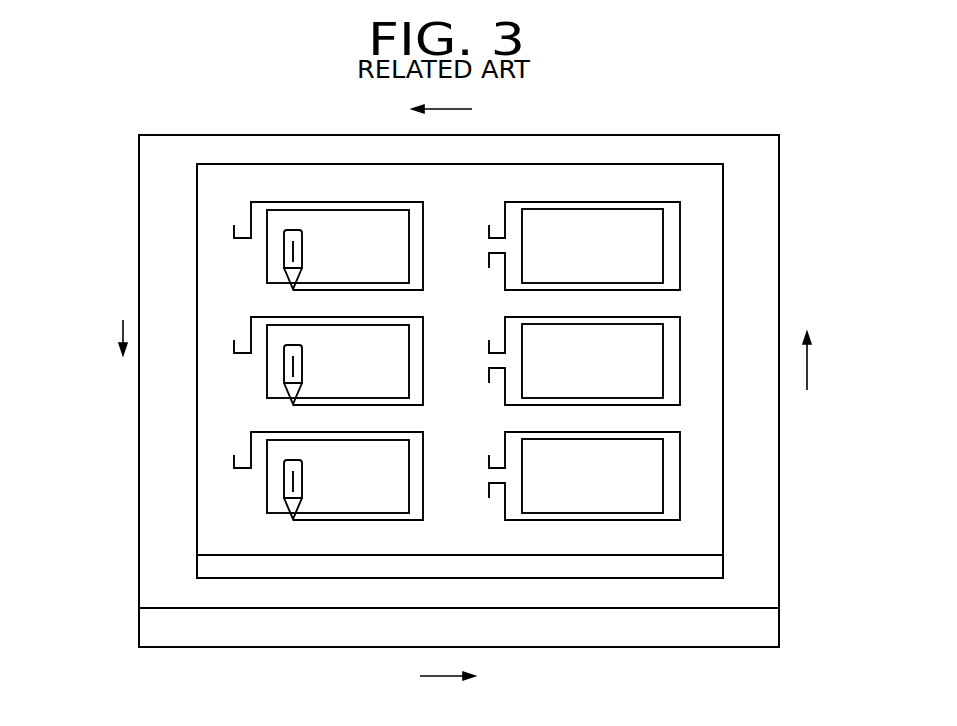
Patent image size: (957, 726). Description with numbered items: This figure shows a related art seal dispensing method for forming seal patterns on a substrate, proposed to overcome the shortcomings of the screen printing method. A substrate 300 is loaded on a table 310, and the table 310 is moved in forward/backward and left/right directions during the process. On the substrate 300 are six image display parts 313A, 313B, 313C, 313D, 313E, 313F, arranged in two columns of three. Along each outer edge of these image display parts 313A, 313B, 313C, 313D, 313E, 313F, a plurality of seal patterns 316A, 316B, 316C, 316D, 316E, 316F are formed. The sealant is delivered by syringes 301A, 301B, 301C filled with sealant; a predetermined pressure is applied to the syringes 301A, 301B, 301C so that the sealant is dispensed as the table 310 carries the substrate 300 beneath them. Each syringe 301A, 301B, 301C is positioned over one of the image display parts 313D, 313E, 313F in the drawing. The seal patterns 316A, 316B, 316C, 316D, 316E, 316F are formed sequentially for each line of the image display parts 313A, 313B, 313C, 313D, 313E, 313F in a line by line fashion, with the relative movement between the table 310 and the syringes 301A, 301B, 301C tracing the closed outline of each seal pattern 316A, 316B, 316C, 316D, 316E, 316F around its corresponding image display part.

The substrate 300 is at (710, 567).
The table 310 is at (758, 627).
The image display part 313A is at (615, 258).
The image display part 313B is at (592, 361).
The image display part 313C is at (592, 476).
The image display part 313D is at (369, 258).
The image display part 313E is at (338, 361).
The image display part 313F is at (338, 476).
The seal pattern 316A is at (623, 202).
The seal pattern 316B is at (668, 351).
The seal pattern 316C is at (668, 466).
The seal pattern 316D is at (290, 203).
The seal pattern 316E is at (245, 351).
The seal pattern 316F is at (245, 466).
The syringe 301A is at (284, 253).
The syringe 301B is at (185, 374).
The syringe 301C is at (185, 489).